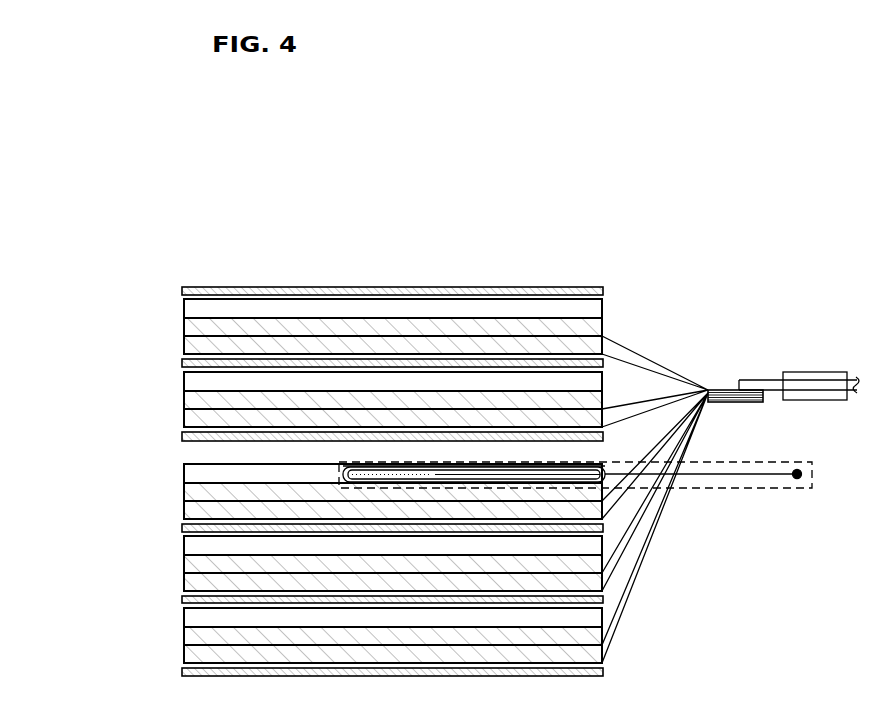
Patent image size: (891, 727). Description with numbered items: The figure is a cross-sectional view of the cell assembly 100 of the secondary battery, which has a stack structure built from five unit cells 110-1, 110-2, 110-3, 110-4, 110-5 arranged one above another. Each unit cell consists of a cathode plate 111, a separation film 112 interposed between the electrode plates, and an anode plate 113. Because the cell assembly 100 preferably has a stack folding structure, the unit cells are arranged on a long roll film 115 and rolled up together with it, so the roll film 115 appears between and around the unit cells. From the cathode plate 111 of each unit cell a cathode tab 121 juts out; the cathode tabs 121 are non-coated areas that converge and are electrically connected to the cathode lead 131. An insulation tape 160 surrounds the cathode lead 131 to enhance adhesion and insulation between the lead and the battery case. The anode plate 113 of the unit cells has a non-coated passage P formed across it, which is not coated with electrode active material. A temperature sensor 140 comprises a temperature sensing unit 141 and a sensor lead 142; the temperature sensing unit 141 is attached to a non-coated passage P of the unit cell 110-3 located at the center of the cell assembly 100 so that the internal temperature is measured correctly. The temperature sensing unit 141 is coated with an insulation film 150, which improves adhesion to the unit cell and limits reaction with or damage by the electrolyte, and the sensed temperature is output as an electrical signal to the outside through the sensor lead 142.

The cell assembly 100 is at (60, 302).
The unit cell 110-1 is at (132, 300).
The unit cell 110-2 is at (132, 373).
The unit cell 110-3 is at (132, 465).
The unit cell 110-4 is at (132, 537).
The unit cell 110-5 is at (132, 609).
The cathode plate 111 is at (185, 346).
The separation film 112 is at (185, 327).
The anode plate 113 is at (185, 309).
The roll film 115 is at (218, 288).
The cathode tab 121 is at (641, 357).
The cathode lead 131 is at (748, 380).
The temperature sensor 140 is at (711, 489).
The temperature sensing unit 141 is at (387, 455).
The sensor lead 142 is at (762, 478).
The insulation film 150 is at (339, 465).
The insulation tape 160 is at (814, 372).
The non-coated passage P is at (480, 382).